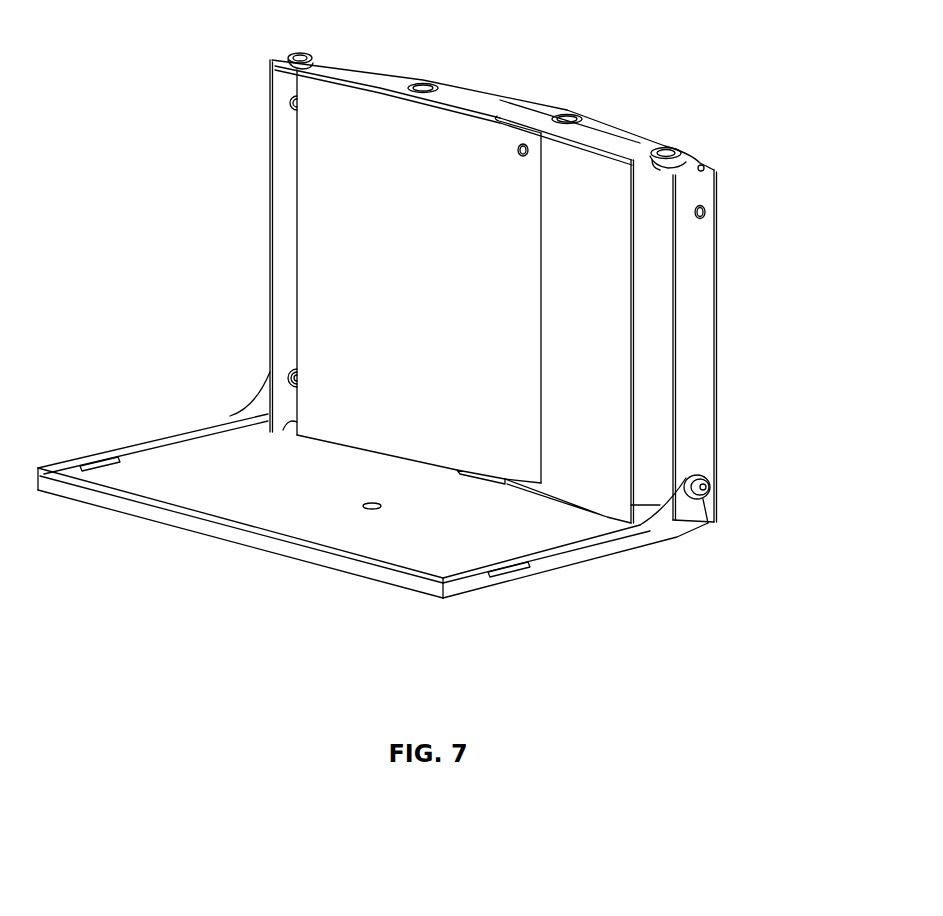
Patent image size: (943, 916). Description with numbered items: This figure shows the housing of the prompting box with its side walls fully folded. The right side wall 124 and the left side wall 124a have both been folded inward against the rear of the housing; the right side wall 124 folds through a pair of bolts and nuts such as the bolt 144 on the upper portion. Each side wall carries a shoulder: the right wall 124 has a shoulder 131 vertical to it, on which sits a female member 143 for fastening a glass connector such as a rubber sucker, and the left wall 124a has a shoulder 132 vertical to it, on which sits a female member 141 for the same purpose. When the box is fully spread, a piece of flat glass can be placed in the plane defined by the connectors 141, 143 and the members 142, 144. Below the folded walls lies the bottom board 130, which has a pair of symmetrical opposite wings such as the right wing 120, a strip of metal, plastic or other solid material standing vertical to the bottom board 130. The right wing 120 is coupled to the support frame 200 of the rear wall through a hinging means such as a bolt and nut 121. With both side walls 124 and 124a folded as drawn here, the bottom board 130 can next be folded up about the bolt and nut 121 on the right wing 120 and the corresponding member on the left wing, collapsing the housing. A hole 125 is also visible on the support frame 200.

The right wing 120 is at (580, 553).
The bolt and nut 121 is at (712, 483).
The right side wall 124 is at (603, 330).
The left side wall 124a is at (327, 188).
The mounting hole 125 is at (703, 214).
The bottom board 130 is at (260, 498).
The shoulder 131 is at (612, 135).
The shoulder 132 is at (360, 73).
The female member 141 is at (424, 90).
The member 142 is at (299, 56).
The female member 143 is at (566, 118).
The bolt 144 is at (668, 152).
The support frame 200 is at (693, 273).